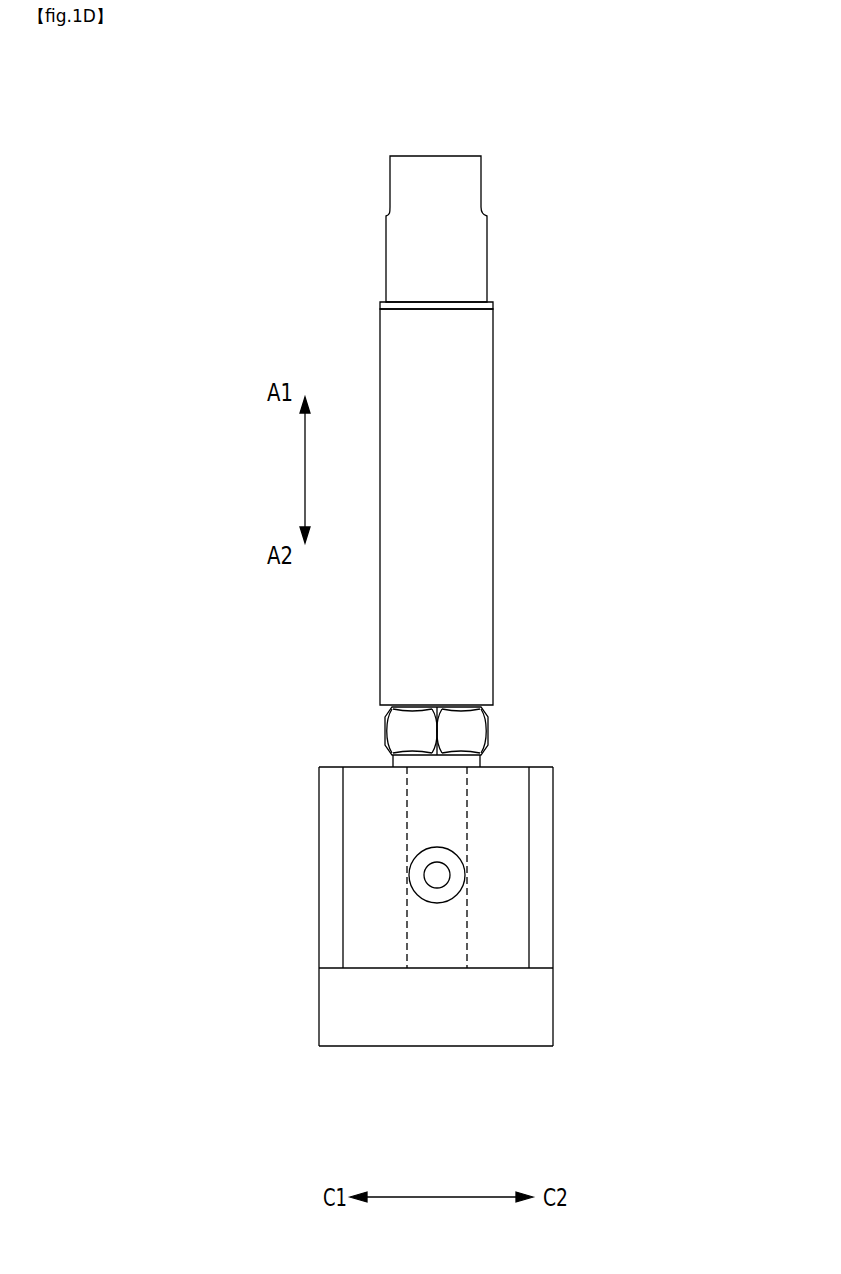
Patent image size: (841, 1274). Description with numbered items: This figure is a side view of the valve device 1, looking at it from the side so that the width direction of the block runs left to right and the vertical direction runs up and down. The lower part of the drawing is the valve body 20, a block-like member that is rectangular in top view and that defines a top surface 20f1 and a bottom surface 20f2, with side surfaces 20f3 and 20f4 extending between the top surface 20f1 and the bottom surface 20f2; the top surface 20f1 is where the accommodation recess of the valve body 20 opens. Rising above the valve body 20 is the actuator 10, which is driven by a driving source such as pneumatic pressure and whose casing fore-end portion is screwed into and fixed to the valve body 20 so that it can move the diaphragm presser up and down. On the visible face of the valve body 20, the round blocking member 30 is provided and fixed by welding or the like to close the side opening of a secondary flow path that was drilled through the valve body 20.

The valve device 1 is at (652, 227).
The actuator 10 is at (493, 423).
The valve body 20 is at (553, 830).
The blocking member 30 is at (463, 883).
The top surface 20f1 is at (360, 766).
The bottom surface 20f2 is at (443, 1046).
The side surface 20f3 is at (319, 968).
The side surface 20f4 is at (553, 980).